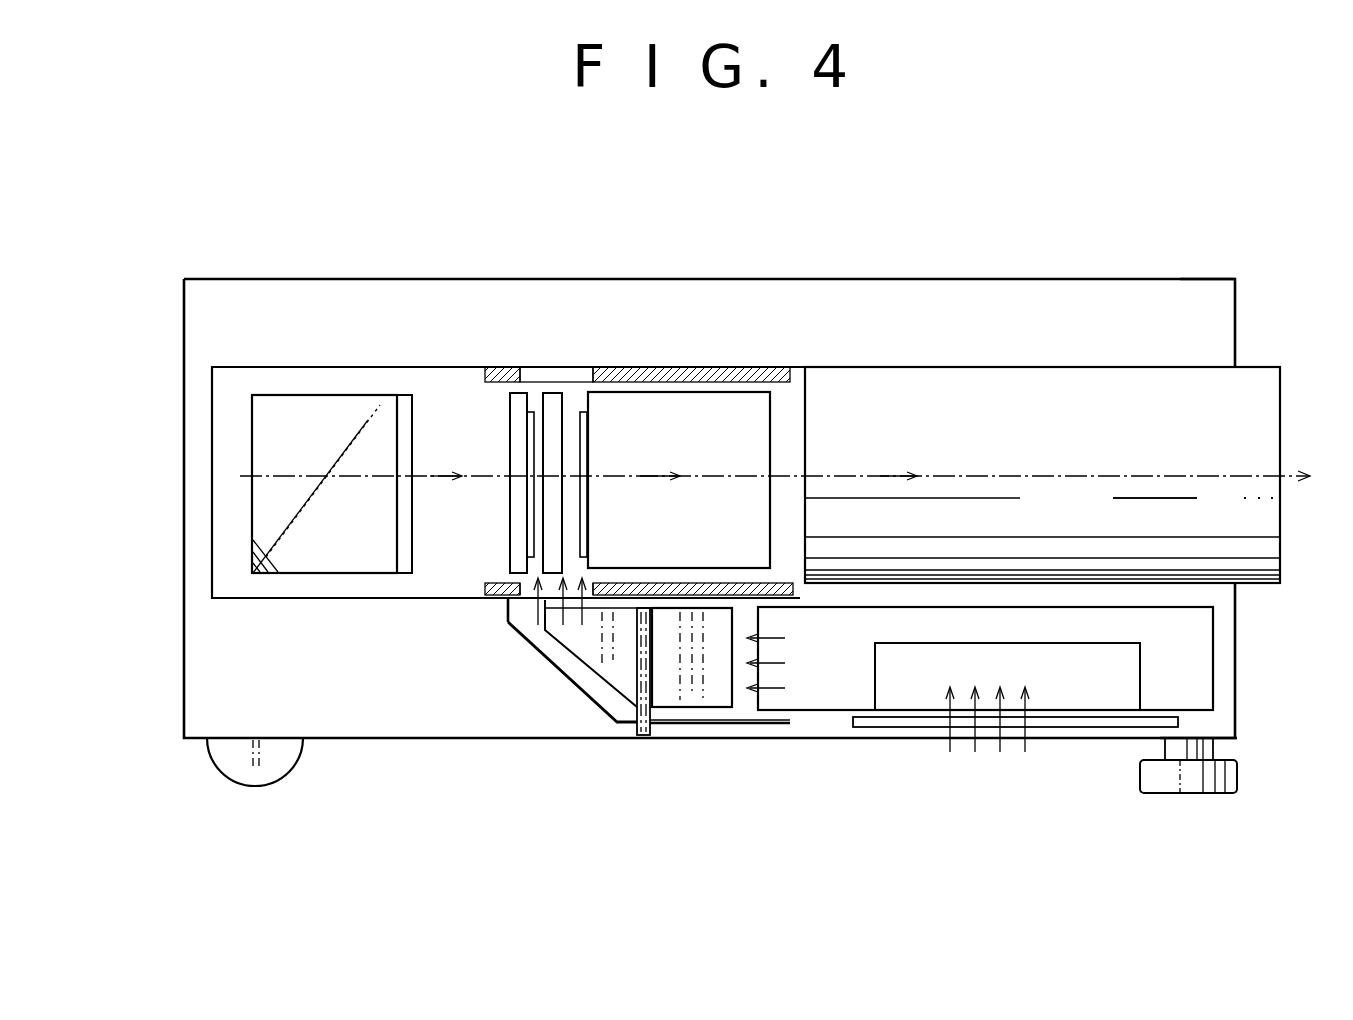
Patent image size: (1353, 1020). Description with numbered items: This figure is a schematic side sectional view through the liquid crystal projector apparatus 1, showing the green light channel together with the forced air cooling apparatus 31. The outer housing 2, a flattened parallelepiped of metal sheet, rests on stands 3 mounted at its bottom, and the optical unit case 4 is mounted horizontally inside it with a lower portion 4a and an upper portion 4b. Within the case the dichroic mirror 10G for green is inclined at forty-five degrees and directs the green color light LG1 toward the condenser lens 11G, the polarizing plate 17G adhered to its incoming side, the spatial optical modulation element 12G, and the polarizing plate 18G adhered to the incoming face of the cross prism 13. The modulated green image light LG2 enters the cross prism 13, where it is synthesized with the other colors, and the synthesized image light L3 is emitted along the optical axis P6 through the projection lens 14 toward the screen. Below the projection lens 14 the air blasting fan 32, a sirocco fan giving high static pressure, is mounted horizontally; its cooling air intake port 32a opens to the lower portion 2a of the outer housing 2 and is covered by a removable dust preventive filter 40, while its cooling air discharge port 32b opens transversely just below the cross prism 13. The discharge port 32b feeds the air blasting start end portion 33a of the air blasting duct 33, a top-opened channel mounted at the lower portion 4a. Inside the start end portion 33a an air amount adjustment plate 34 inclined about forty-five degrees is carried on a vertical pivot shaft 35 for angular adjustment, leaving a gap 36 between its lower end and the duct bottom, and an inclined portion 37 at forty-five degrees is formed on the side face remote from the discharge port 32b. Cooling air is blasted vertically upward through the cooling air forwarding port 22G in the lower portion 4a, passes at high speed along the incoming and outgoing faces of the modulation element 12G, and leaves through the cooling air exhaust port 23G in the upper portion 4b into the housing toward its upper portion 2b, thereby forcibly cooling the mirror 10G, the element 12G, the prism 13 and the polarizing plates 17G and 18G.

The liquid crystal projector apparatus 1 is at (165, 262).
The outer housing 2 is at (1122, 278).
The lower portion of outer housing 2a is at (1220, 742).
The upper portion of outer housing 2b is at (1212, 278).
The stand 3 is at (270, 775).
The optical unit case 4 is at (327, 367).
The lower portion of optical unit case 4a is at (233, 598).
The upper portion of optical unit case 4b is at (258, 367).
The dichroic mirror for G 10G is at (258, 525).
The condenser lens for G 11G is at (512, 415).
The spatial optical modulation element for G 12G is at (553, 395).
The cross prism 13 is at (752, 395).
The projection lens 14 is at (1268, 385).
The polarizing plate 17G is at (530, 410).
The polarizing plate 18G is at (586, 420).
The cooling air forwarding port 22G is at (510, 618).
The cooling air exhaust port 23G is at (578, 373).
The forced air cooling apparatus 31 is at (930, 742).
The air blasting fan 32 is at (1132, 668).
The cooling air intake port 32a is at (1060, 730).
The cooling air discharge port 32b is at (760, 676).
The air blasting duct 33 is at (700, 732).
The air blasting start end portion 33a is at (667, 728).
The air amount adjustment plate 34 is at (722, 687).
The pivot shaft 35 is at (638, 678).
The gap 36 is at (716, 710).
The inclined portion 37 is at (560, 680).
The dust preventive filter 40 is at (1100, 727).
The green color light LG1 is at (438, 474).
The green image light LG2 is at (570, 476).
The synthesized image light L3 is at (972, 472).
The optical axis P6 is at (1115, 497).